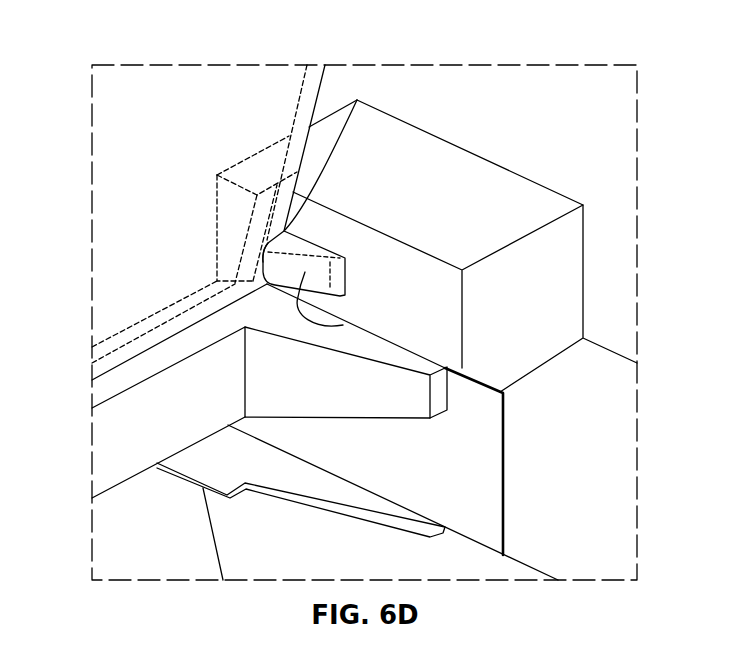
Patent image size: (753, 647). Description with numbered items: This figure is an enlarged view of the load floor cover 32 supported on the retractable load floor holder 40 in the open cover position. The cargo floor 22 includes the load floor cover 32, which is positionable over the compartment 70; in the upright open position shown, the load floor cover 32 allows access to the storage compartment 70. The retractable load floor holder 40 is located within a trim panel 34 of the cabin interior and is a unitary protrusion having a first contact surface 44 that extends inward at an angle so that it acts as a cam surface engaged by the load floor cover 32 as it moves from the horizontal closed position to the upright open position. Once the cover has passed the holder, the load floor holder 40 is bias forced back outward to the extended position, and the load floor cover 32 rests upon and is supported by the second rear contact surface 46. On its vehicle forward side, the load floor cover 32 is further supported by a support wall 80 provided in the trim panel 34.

The cargo floor 22 is at (175, 357).
The load floor cover 32 is at (314, 104).
The trim panel 34 is at (512, 195).
The retractable load floor holder 40 is at (297, 247).
The first contact surface 44 is at (343, 325).
The second rear contact surface 46 is at (280, 236).
The compartment 70 is at (355, 568).
The support wall 80 is at (280, 188).